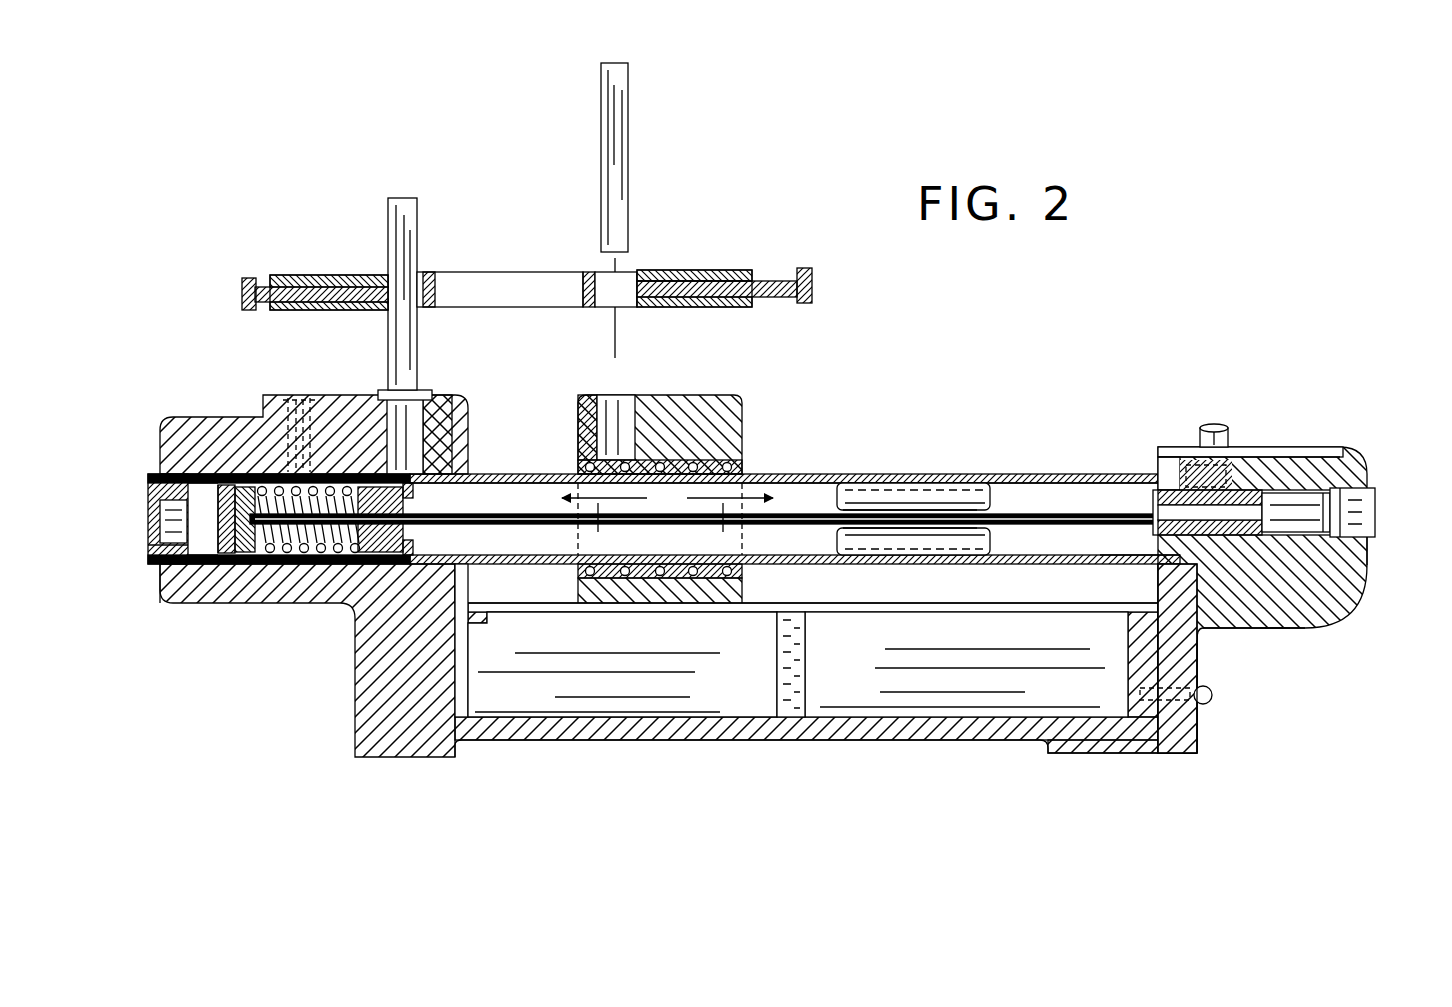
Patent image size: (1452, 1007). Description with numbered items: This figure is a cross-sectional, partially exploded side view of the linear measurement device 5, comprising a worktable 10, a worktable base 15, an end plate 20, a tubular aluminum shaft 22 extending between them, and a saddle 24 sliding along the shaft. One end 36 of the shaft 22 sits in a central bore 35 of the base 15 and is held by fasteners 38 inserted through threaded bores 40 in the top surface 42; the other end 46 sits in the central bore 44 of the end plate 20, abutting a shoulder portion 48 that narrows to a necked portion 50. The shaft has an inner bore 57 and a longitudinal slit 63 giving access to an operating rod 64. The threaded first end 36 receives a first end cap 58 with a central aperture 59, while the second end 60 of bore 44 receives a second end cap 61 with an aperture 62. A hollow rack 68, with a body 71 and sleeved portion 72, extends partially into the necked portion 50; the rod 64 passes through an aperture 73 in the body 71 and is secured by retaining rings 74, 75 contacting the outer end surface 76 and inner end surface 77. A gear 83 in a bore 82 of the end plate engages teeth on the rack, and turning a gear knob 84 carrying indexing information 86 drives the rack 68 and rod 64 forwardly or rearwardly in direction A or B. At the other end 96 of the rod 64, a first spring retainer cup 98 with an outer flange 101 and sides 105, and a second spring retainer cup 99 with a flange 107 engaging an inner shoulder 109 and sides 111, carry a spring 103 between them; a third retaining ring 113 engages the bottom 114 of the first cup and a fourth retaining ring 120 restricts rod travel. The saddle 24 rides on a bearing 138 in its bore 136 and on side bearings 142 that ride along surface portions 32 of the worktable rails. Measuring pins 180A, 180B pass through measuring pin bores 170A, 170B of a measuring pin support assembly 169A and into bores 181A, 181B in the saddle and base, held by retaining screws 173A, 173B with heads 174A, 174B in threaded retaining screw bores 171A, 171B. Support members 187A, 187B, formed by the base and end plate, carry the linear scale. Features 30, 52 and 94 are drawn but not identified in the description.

The linear measurement device 5 is at (1084, 353).
The worktable 10 is at (580, 741).
The worktable base 15 is at (222, 612).
The end plate 20 is at (1203, 670).
The shaft 22 is at (874, 490).
The saddle 24 is at (668, 412).
The detent ball 30 is at (1210, 702).
The surface portions 32 is at (940, 603).
The central bore 35 is at (178, 450).
The first end of shaft 36 is at (165, 588).
The fasteners 38 is at (308, 396).
The threaded bores 40 is at (288, 404).
The top surface 42 is at (362, 397).
The central bore 44 is at (1355, 602).
The second end of shaft 46 is at (1160, 464).
The shoulder portion 48 is at (1166, 592).
The necked portion 50 is at (1360, 456).
The partition 52 is at (756, 690).
The inner bore 57 is at (1012, 496).
The first threaded end cap 58 is at (150, 545).
The central inner aperture 59 is at (160, 516).
The second end of bore 60 is at (1370, 478).
The second threaded end cap 61 is at (1372, 493).
The central inner aperture 62 is at (1372, 527).
The longitudinally extending slit 63 is at (906, 500).
The operating rod 64 is at (792, 472).
The rack 68 is at (1272, 629).
The body of rack 71 is at (1234, 456).
The sleeved portion 72 is at (1330, 628).
The aperture 73 is at (1210, 630).
The first retaining ring 74 is at (1105, 545).
The second retaining ring 75 is at (1368, 572).
The outer end surface 76 is at (1157, 503).
The inner end surface 77 is at (1280, 492).
The bore 82 is at (1180, 470).
The gear 83 is at (1186, 460).
The gear knob 84 is at (1216, 424).
The indexing information 86 is at (1203, 440).
The seal 94 is at (1292, 488).
The other end of operating rod 96 is at (215, 545).
The first spring retainer cup 98 is at (248, 552).
The second spring retainer cup 99 is at (370, 552).
The outer flange 101 is at (155, 490).
The spring 103 is at (300, 598).
The sides of first retainer cup 105 is at (224, 484).
The outer flange 107 is at (405, 497).
The inner shoulder 109 is at (412, 547).
The sides of second retainer cup 111 is at (456, 590).
The third retaining ring 113 is at (214, 565).
The bottom of first retainer cup 114 is at (220, 486).
The fourth retaining ring 120 is at (472, 503).
The bore 136 is at (578, 466).
The bearing 138 is at (743, 462).
The bearings 142 is at (578, 625).
The measuring pin support assembly 169A is at (727, 260).
The measuring pin bore 170A is at (625, 272).
The measuring pin bore 170B is at (420, 272).
The threaded retaining screw bore 171A is at (738, 268).
The threaded retaining screw bore 171B is at (362, 275).
The retaining screw 173A is at (770, 303).
The retaining screw 173B is at (268, 278).
The head of retaining screw 174A is at (813, 288).
The head of retaining screw 174B is at (246, 284).
The measuring pin 180A is at (633, 152).
The measuring pin 180B is at (418, 215).
The bore 181A is at (602, 393).
The bore 181B is at (418, 392).
The support member 187A is at (462, 693).
The support member 187B is at (1128, 682).